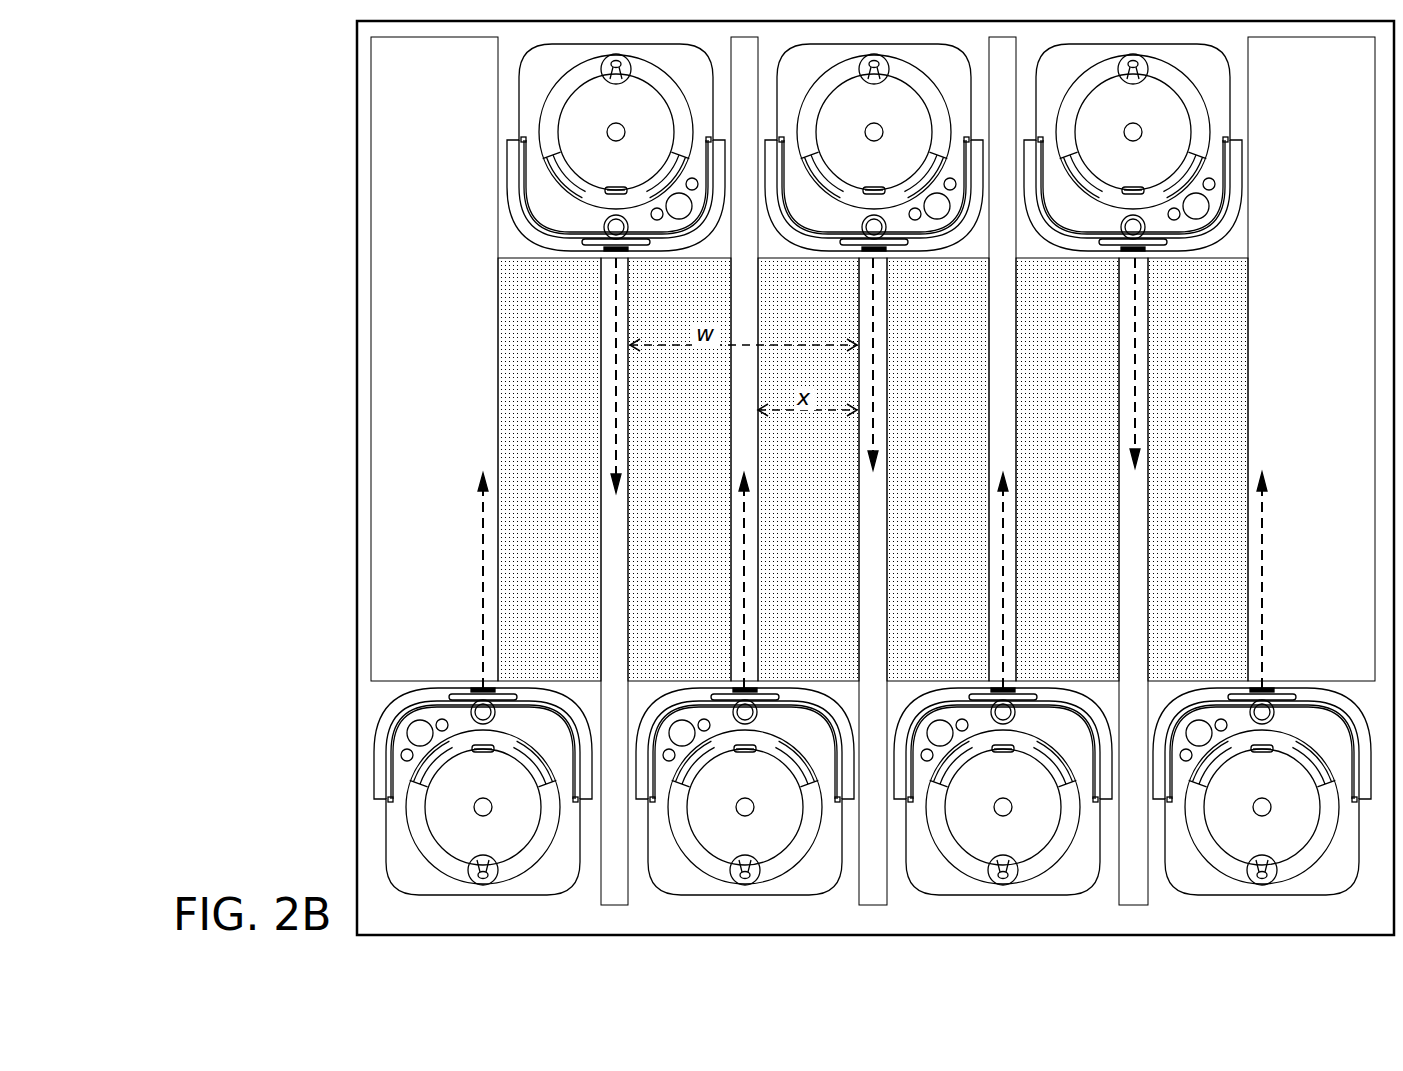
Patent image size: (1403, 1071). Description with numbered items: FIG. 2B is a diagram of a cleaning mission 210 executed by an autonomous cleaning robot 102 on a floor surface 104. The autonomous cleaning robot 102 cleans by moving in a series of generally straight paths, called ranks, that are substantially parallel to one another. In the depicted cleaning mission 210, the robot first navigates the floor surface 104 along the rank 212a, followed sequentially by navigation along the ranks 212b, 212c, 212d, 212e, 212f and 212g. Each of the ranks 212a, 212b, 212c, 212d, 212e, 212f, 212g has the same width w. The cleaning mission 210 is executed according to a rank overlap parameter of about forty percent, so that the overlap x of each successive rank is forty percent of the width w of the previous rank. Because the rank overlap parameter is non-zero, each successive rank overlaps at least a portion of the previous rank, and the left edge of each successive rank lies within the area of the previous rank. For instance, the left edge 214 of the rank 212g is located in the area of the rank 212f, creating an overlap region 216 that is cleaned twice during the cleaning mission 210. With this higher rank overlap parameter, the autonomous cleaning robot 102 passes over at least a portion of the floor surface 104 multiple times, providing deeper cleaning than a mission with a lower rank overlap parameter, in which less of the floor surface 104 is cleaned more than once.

The autonomous cleaning robot 102 is at (549, 250).
The floor surface 104 is at (353, 380).
The cleaning mission 210 is at (331, 106).
The rank 212a is at (516, 456).
The rank 212b is at (645, 522).
The rank 212c is at (775, 456).
The rank 212d is at (905, 522).
The rank 212e is at (1029, 456).
The rank 212f is at (1157, 522).
The rank 212g is at (1290, 456).
The left edge 214 is at (1150, 410).
The overlap region 216 is at (1215, 584).